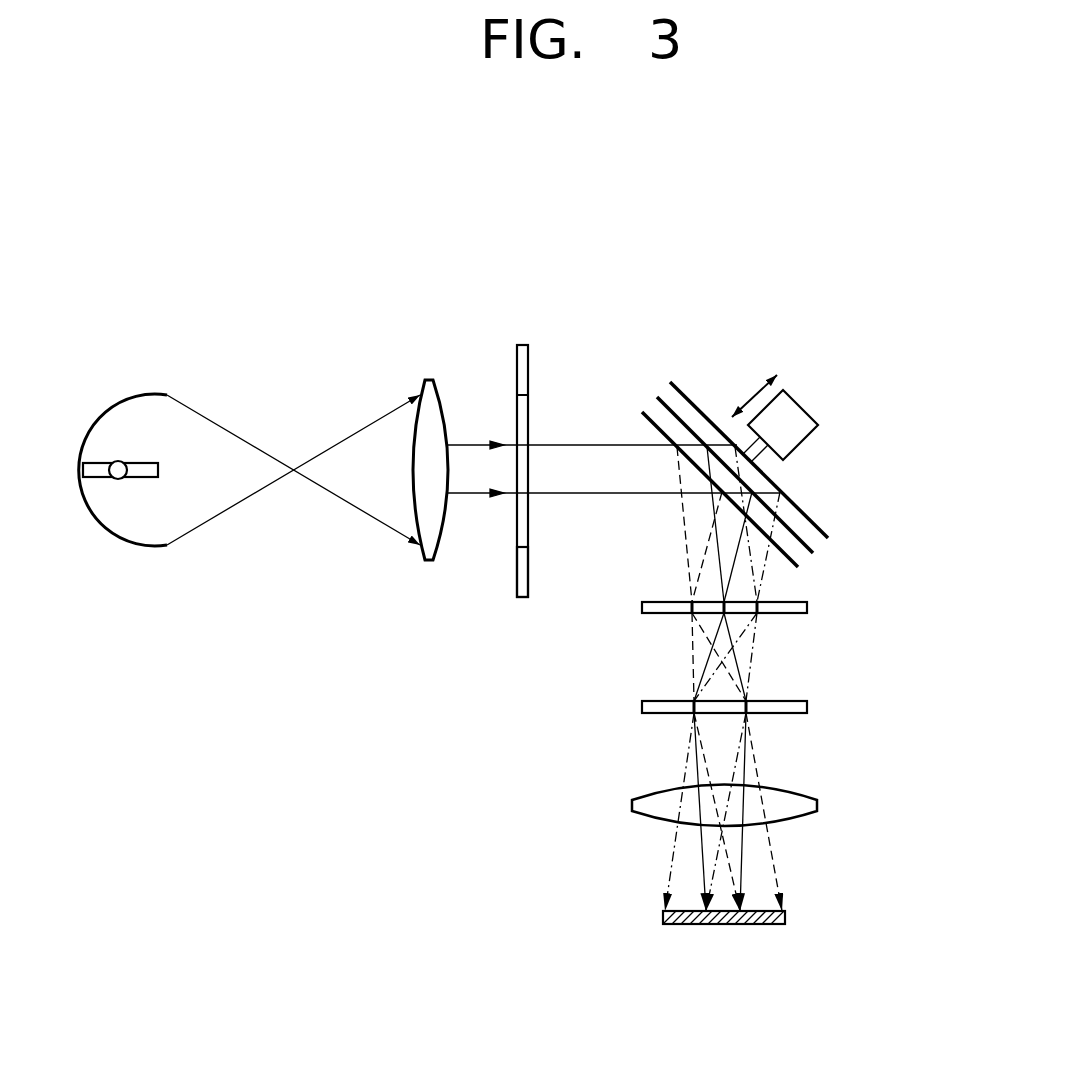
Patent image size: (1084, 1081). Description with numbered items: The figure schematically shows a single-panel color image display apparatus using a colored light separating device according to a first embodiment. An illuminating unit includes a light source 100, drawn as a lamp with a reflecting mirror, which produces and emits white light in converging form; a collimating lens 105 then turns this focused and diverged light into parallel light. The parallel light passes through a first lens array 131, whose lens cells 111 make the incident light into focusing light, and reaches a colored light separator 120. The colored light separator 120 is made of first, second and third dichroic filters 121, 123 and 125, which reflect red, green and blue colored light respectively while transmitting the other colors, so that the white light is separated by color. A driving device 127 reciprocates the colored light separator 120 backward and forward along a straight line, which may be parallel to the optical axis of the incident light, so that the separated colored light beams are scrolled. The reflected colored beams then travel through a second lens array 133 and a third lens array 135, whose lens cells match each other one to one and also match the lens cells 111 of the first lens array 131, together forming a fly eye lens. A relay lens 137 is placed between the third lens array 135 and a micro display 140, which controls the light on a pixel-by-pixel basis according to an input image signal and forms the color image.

The light source 100 is at (120, 385).
The collimating lens 105 is at (430, 380).
The first lens array 131 is at (526, 345).
The lens cell 111 is at (518, 578).
The colored light separator 120 is at (729, 420).
The first dichroic filter 121 is at (645, 414).
The second dichroic filter 123 is at (660, 397).
The third dichroic filter 125 is at (695, 402).
The driving device 127 is at (805, 410).
The second lens array 133 is at (808, 607).
The third lens array 135 is at (808, 708).
The relay lens 137 is at (817, 805).
The micro display 140 is at (795, 916).